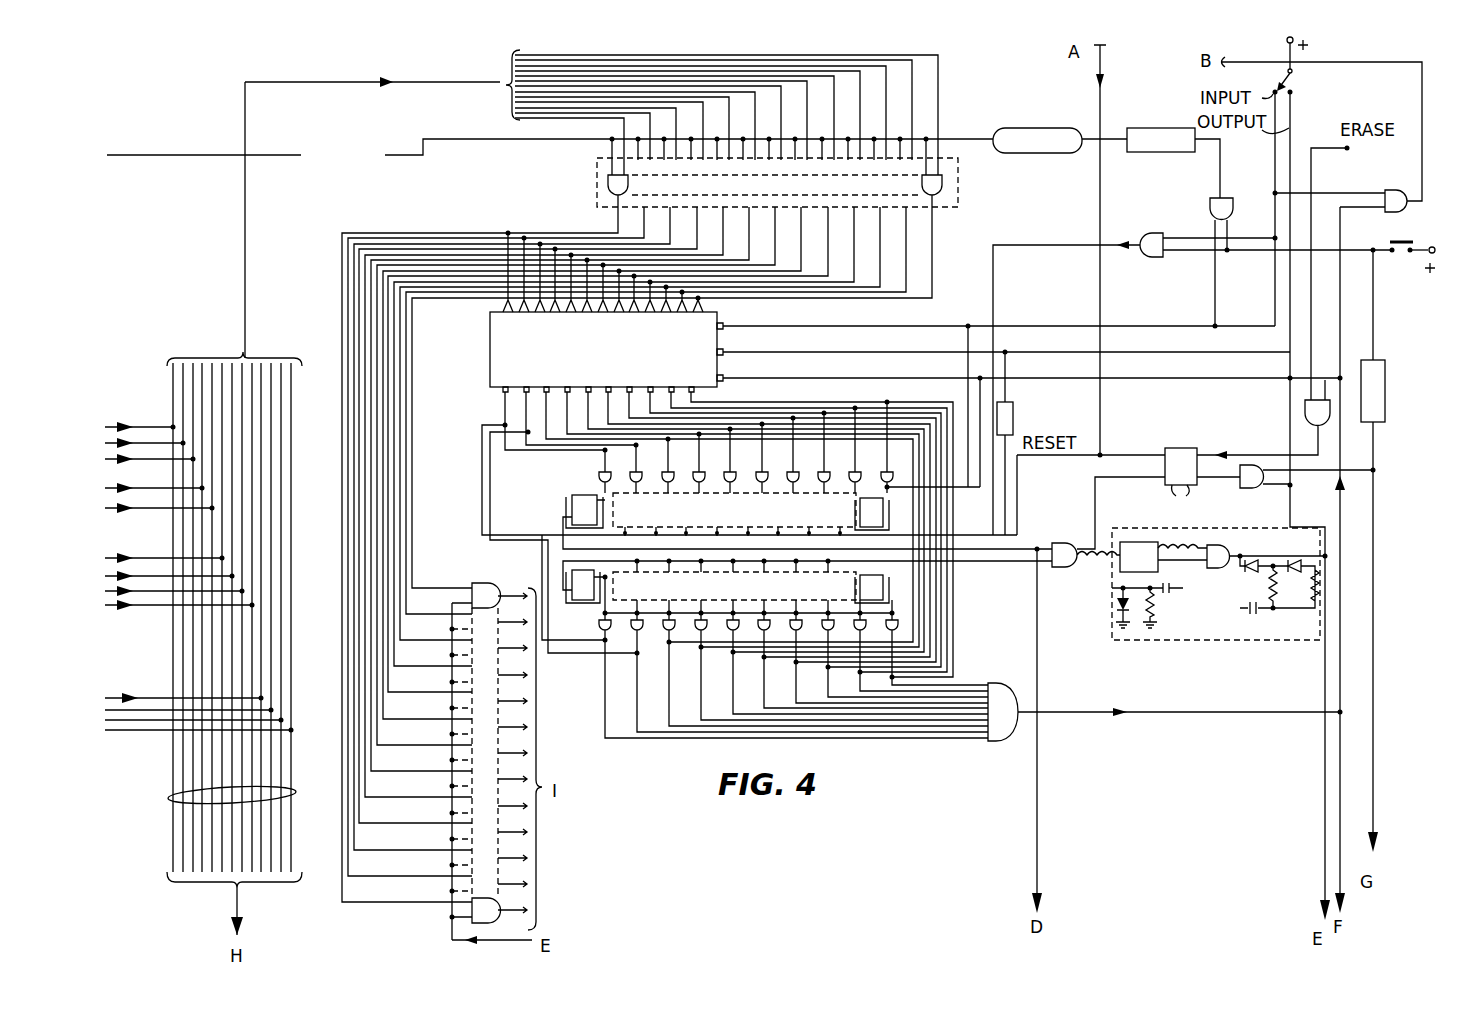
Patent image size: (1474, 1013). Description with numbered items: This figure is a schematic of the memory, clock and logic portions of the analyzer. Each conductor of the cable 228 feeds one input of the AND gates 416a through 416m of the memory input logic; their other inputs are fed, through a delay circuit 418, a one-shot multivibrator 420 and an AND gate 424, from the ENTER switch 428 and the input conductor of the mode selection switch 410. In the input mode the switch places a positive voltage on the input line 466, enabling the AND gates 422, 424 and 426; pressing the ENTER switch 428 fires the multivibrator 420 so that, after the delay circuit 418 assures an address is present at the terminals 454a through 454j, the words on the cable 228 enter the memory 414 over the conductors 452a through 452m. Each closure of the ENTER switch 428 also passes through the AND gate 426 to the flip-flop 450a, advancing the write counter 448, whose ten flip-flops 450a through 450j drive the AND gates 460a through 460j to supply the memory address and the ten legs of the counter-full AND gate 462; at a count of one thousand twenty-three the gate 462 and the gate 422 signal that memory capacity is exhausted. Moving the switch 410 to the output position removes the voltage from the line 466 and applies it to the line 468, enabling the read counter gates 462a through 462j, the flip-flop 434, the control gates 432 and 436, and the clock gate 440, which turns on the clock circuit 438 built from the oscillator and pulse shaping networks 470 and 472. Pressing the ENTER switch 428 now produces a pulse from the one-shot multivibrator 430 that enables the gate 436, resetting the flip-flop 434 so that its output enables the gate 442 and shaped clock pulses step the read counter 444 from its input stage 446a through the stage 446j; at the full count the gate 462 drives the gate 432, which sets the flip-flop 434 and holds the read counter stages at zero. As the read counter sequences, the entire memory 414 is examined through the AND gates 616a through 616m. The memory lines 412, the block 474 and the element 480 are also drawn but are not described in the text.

The cable 228 is at (170, 795).
The mode selection switch 410 is at (1302, 83).
The memory control lines 412 is at (725, 331).
The memory 414 is at (490, 345).
The AND gate 416a is at (606, 183).
The AND gate 416m is at (944, 186).
The delay circuit 418 is at (1003, 128).
The one-shot multivibrator 420 is at (1175, 112).
The AND gate 422 is at (1397, 189).
The AND gate 424 is at (1209, 204).
The AND gate 426 is at (1162, 258).
The ENTER switch 428 is at (1401, 260).
The one-shot multivibrator 430 is at (1390, 364).
The control gate 432 is at (1304, 412).
The flip-flop 434 is at (1186, 446).
The control gate 436 is at (1252, 489).
The clock circuit 438 is at (1216, 602).
The clock gate 440 is at (1250, 544).
The gate 442 is at (1072, 542).
The read counter 444 is at (734, 510).
The input counter stage 446a is at (571, 510).
The read counter stage 446j is at (884, 515).
The write counter 448 is at (734, 586).
The flip-flop 450a is at (571, 585).
The flip-flop 450j is at (884, 588).
The conductor 452a is at (500, 300).
The conductor 452m is at (704, 304).
The memory address terminal 454a is at (500, 392).
The memory address terminal 454j is at (700, 391).
The AND gate 460a is at (607, 633).
The AND gate 460j is at (896, 631).
The ten-legged AND gate 462 is at (996, 743).
The read counter gate 462a is at (603, 471).
The read counter gate 462j is at (887, 470).
The input line 466 is at (1275, 181).
The output line 468 is at (1290, 224).
The clock oscillator network 470 is at (1226, 611).
The pulse shaping network 472 is at (1160, 602).
The oscillator block 474 is at (1143, 541).
The resistor 480 is at (1024, 403).
The AND gate 616a is at (474, 582).
The AND gate 616m is at (470, 912).